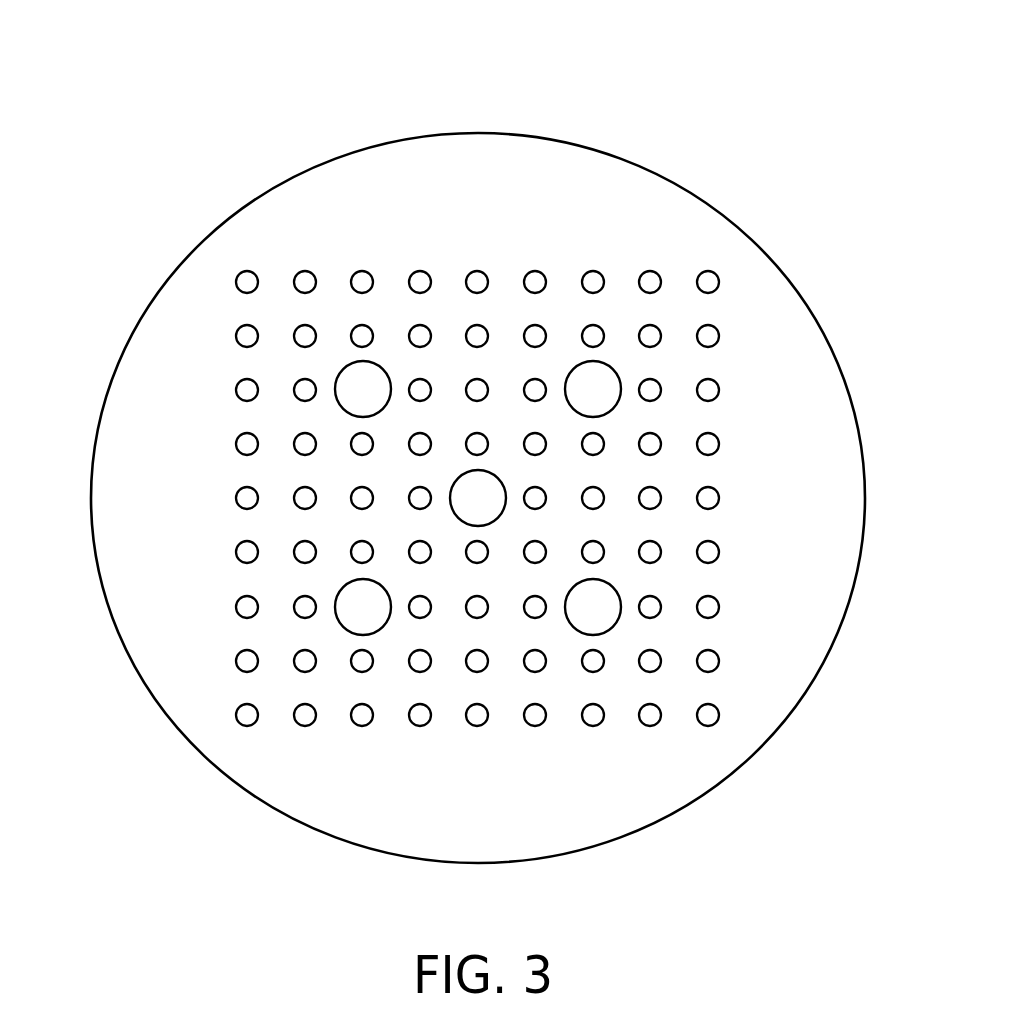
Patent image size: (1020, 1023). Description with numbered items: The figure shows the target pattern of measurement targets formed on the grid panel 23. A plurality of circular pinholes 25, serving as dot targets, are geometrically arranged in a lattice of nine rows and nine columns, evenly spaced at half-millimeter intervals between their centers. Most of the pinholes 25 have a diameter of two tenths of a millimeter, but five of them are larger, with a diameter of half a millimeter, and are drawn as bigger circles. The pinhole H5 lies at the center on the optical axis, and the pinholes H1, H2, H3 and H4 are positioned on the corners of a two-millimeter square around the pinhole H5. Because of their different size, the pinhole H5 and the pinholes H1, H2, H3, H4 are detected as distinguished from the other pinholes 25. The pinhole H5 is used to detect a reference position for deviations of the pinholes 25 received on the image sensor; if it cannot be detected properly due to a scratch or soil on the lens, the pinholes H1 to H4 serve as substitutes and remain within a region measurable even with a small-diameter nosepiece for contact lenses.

The grid panel 23 is at (805, 229).
The pinholes 25 is at (706, 281).
The pinhole H1 is at (363, 389).
The pinhole H2 is at (593, 389).
The pinhole H3 is at (363, 607).
The pinhole H4 is at (593, 607).
The pinhole H5 is at (478, 498).